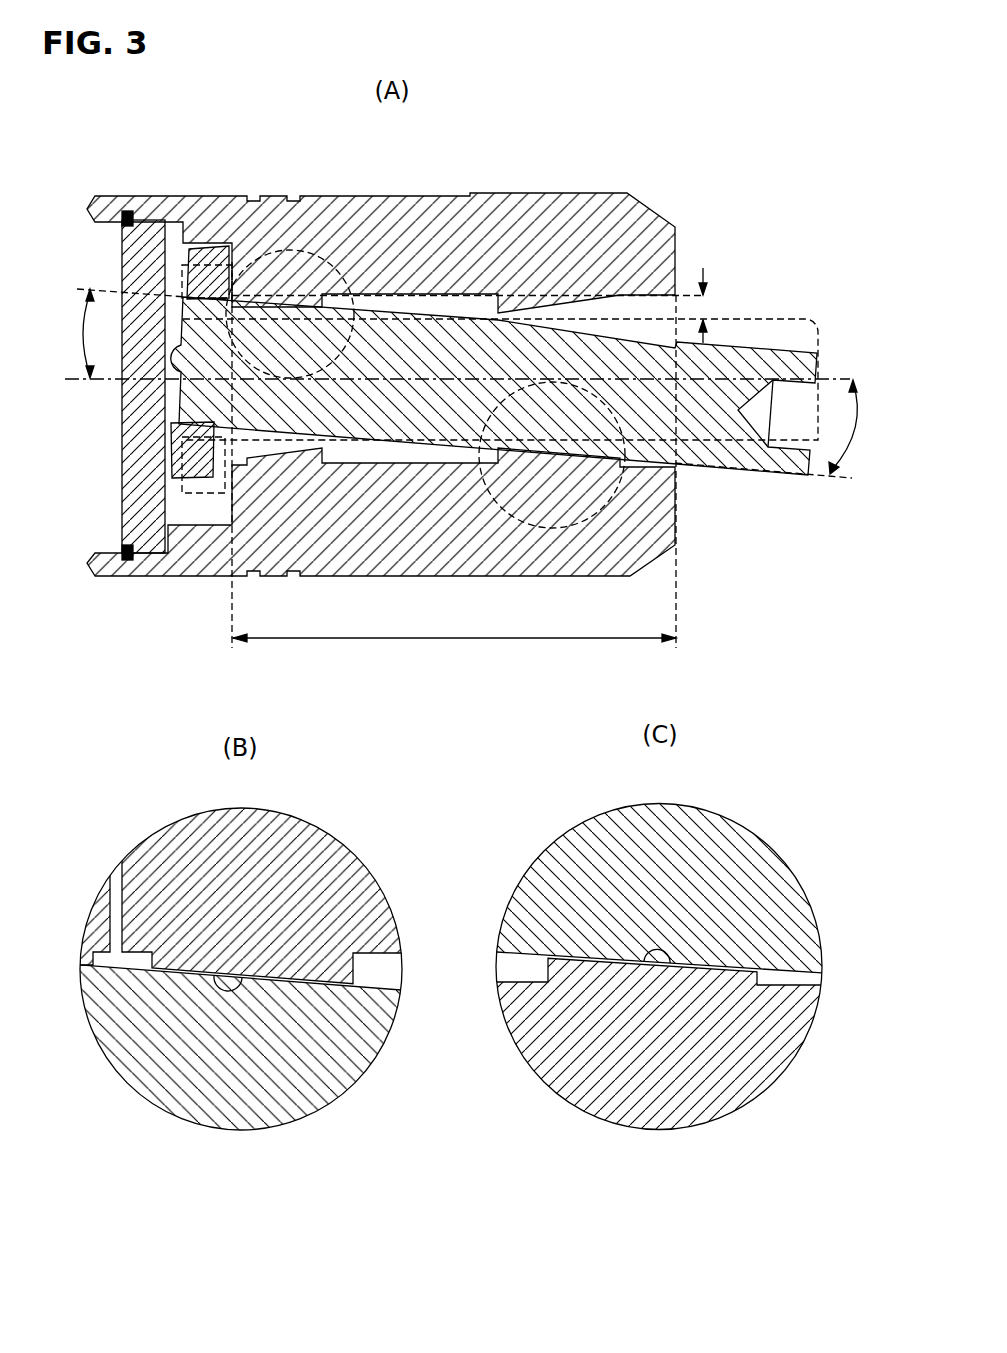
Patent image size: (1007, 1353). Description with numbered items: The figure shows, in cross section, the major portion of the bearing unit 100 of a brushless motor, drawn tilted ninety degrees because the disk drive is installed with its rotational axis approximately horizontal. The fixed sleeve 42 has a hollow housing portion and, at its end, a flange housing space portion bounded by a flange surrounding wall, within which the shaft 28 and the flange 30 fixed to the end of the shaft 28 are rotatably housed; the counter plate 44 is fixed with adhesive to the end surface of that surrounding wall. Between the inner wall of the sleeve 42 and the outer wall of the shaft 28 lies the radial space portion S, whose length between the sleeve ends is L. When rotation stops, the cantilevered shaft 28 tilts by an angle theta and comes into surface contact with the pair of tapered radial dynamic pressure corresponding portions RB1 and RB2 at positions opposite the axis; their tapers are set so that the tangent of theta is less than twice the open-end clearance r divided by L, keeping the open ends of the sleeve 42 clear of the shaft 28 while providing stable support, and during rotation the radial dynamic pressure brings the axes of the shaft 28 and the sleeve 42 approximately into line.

The bearing unit 100 is at (672, 170).
The sleeve 42 is at (440, 193).
The shaft 28 is at (757, 347).
The flange 30 is at (210, 247).
The counter plate 44 is at (120, 258).
The radial dynamic pressure corresponding portion RB1 is at (263, 302).
The radial dynamic pressure corresponding portion RB2 is at (527, 447).
The radial space portion S is at (486, 317).